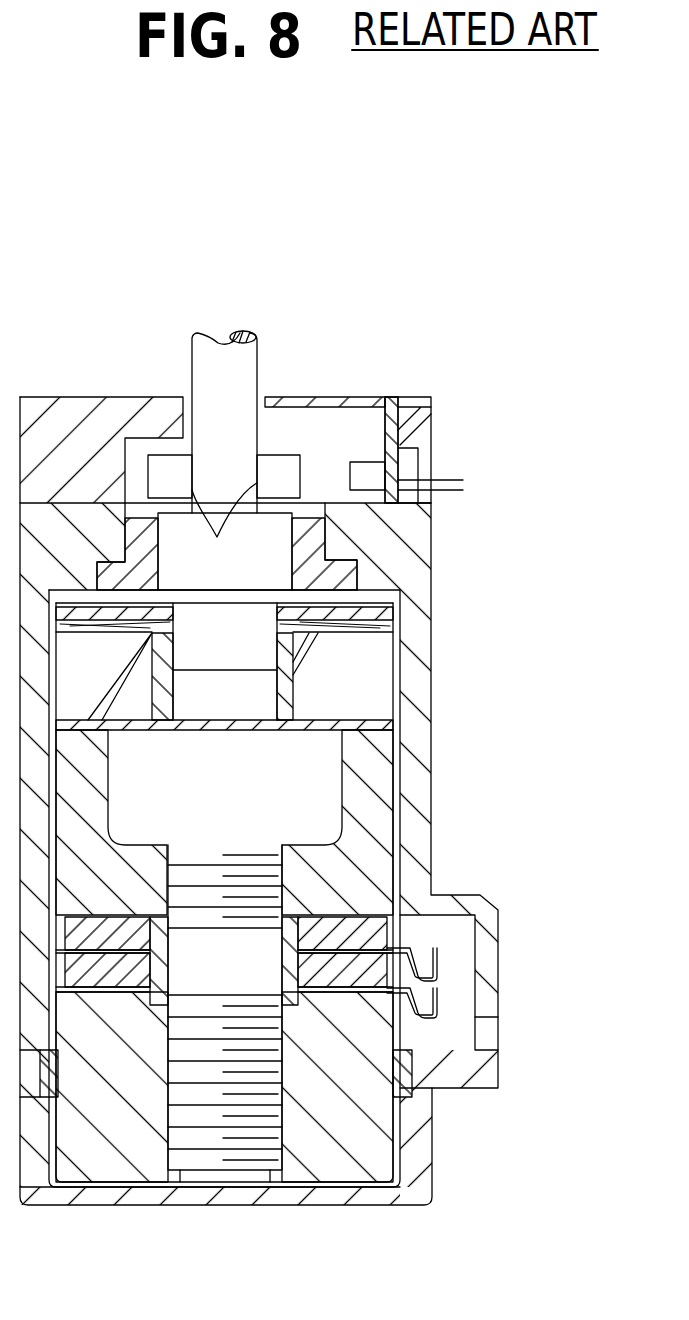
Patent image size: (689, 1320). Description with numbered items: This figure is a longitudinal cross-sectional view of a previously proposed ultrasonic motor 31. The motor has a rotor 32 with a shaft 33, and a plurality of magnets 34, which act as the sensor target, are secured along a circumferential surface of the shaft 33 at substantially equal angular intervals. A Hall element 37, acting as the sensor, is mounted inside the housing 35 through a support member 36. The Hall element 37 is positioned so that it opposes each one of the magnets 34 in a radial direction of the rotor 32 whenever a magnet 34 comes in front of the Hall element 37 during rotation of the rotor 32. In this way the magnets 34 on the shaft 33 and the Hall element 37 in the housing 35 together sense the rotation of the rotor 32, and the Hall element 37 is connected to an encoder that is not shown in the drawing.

The ultrasonic motor 31 is at (441, 356).
The rotor 32 is at (403, 682).
The shaft 33 is at (208, 338).
The magnets 34 is at (227, 536).
The housing 35 is at (431, 422).
The support member 36 is at (392, 397).
The Hall element 37 is at (369, 466).